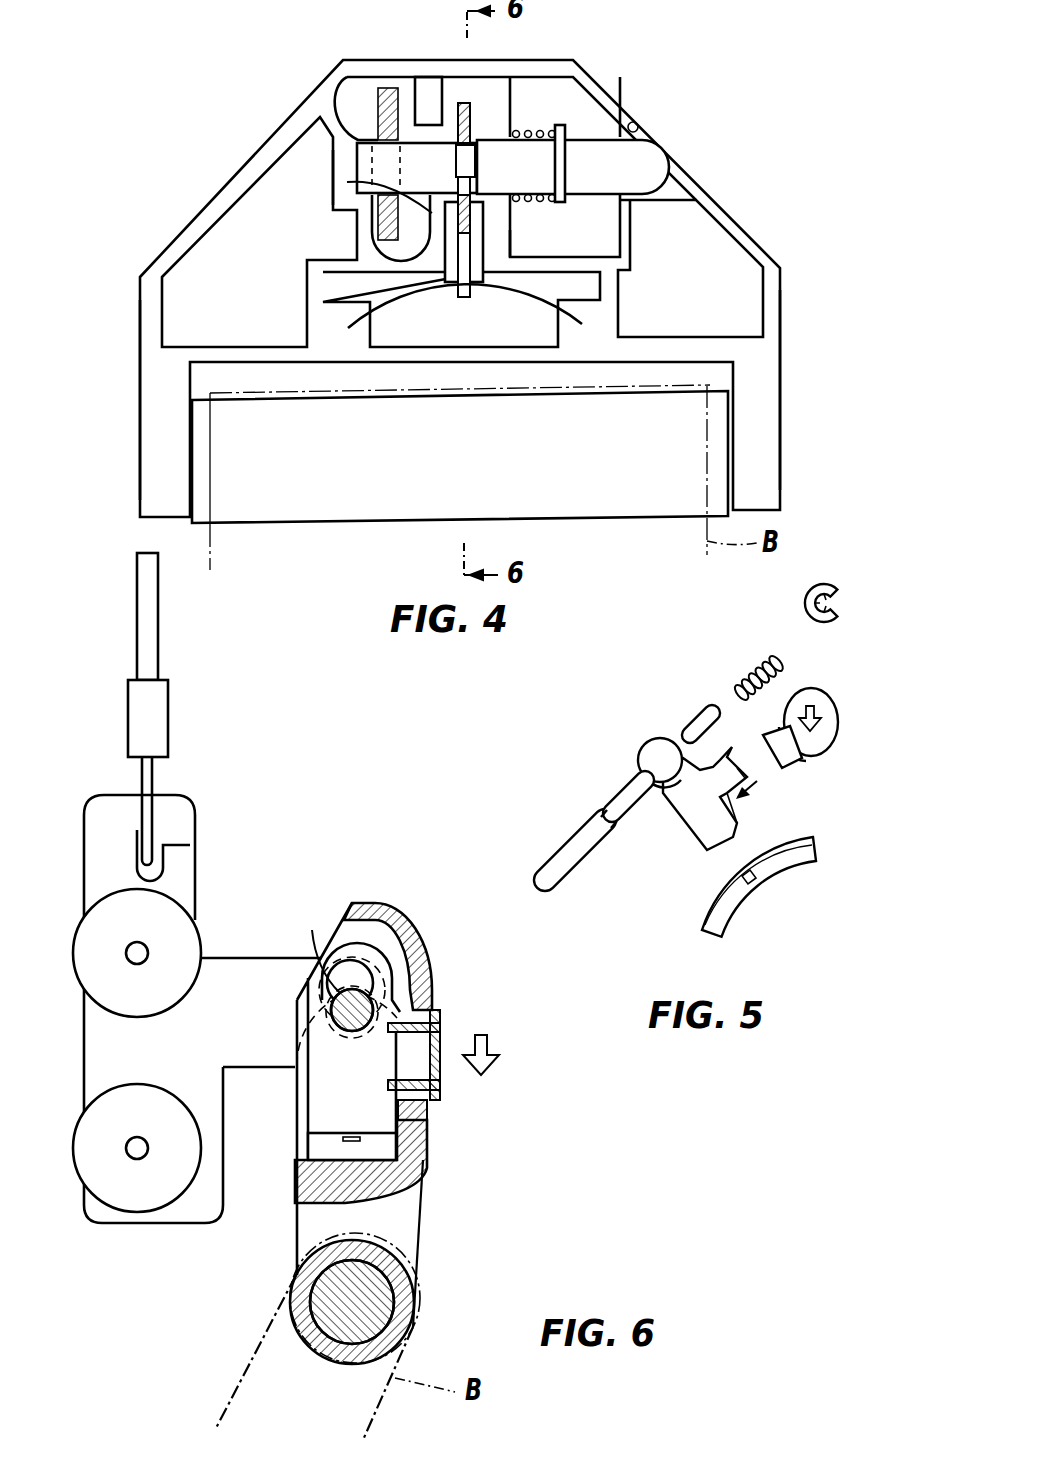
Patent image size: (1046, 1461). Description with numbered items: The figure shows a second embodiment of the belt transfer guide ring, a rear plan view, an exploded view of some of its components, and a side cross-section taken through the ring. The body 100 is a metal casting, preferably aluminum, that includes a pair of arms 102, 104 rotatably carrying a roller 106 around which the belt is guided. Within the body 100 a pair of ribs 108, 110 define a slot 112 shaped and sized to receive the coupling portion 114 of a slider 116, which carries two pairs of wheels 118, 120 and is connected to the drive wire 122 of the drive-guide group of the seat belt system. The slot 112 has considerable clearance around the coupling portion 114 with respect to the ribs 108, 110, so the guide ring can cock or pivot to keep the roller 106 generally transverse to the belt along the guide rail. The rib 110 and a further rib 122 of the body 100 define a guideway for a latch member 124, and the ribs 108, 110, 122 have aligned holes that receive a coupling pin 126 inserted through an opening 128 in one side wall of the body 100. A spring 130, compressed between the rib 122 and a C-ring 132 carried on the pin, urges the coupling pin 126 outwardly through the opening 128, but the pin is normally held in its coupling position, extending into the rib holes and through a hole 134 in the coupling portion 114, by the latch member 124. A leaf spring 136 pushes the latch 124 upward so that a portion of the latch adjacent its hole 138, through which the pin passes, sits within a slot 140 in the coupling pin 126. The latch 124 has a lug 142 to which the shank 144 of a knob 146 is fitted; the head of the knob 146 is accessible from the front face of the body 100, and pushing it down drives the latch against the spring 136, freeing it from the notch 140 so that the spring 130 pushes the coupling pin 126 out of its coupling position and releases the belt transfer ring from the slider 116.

In FIG. 4, the body 100 is at (740, 240).
In FIG. 6, the body 100 is at (408, 917).
In FIG. 4, the arm 102 is at (766, 432).
In FIG. 4, the arm 104 is at (157, 448).
In FIG. 4, the roller 106 is at (473, 507).
In FIG. 6, the roller 106 is at (393, 1277).
In FIG. 4, the rib 108 is at (332, 152).
In FIG. 4, the rib 110 is at (436, 212).
In FIG. 4, the slot 112 is at (355, 92).
In FIG. 4, the coupling portion 114 is at (389, 88).
In FIG. 6, the coupling portion 114 is at (245, 968).
In FIG. 6, the slider 116 is at (84, 1037).
In FIG. 6, the wheels 118 is at (77, 925).
In FIG. 6, the wheels 120 is at (78, 1125).
In FIG. 4, the drive wire 122 is at (503, 231).
In FIG. 6, the drive wire 122 is at (152, 645).
In FIG. 4, the latch member 124 is at (463, 103).
In FIG. 5, the latch member 124 is at (690, 825).
In FIG. 6, the latch member 124 is at (332, 1090).
In FIG. 4, the coupling pin 126 is at (645, 148).
In FIG. 5, the coupling pin 126 is at (570, 832).
In FIG. 6, the coupling pin 126 is at (365, 1005).
In FIG. 4, the opening 128 is at (641, 124).
In FIG. 4, the spring 130 is at (542, 130).
In FIG. 5, the spring 130 is at (752, 665).
In FIG. 4, the C-ring 132 is at (567, 178).
In FIG. 5, the C-ring 132 is at (845, 589).
In FIG. 4, the hole 134 is at (347, 182).
In FIG. 6, the hole 134 is at (316, 944).
In FIG. 4, the leaf spring 136 is at (505, 297).
In FIG. 5, the leaf spring 136 is at (796, 865).
In FIG. 6, the leaf spring 136 is at (318, 1145).
In FIG. 4, the hole 138 is at (466, 112).
In FIG. 5, the hole 138 is at (650, 758).
In FIG. 6, the hole 138 is at (373, 977).
In FIG. 5, the slot 140 is at (604, 836).
In FIG. 5, the lug 142 is at (737, 765).
In FIG. 6, the lug 142 is at (432, 1065).
In FIG. 5, the shank 144 is at (795, 758).
In FIG. 6, the shank 144 is at (428, 1112).
In FIG. 5, the knob 146 is at (830, 705).
In FIG. 6, the knob 146 is at (441, 1023).